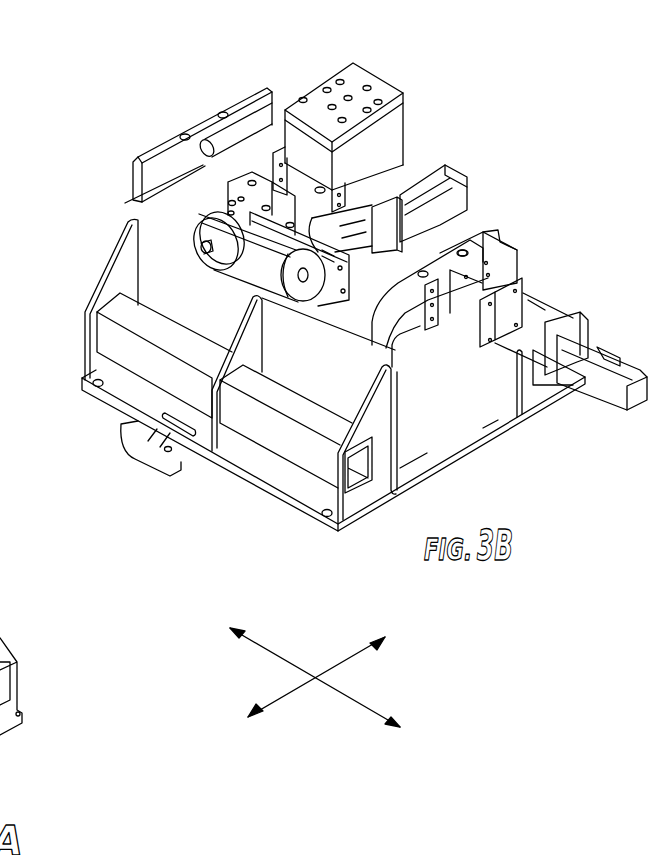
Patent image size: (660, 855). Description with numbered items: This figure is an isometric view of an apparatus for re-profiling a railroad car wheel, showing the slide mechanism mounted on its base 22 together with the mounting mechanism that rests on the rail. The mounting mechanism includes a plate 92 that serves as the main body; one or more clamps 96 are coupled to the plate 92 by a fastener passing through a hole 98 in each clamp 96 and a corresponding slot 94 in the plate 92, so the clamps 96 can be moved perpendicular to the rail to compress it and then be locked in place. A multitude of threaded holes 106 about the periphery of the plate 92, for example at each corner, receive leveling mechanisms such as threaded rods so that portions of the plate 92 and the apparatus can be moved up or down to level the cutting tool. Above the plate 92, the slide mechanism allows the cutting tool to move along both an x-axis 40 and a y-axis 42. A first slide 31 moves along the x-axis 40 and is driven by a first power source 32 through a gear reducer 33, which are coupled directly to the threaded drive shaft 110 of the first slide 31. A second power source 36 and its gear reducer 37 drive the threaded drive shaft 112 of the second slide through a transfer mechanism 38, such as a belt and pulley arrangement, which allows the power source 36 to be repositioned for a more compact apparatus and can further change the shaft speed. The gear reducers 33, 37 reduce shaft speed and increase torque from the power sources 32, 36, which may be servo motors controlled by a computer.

The base 22 is at (148, 268).
The first slide 31 is at (370, 210).
The first power source 32 is at (588, 382).
The gear reducer 33 is at (540, 320).
The second power source 36 is at (440, 172).
The gear reducer 37 is at (370, 247).
The transfer mechanism 38 is at (217, 215).
The x-axis 40 is at (283, 662).
The y-axis 42 is at (302, 683).
The plate 92 is at (290, 487).
The slot 94 is at (192, 437).
The clamp 96 is at (147, 452).
The hole 98 is at (168, 452).
The threaded holes 106 is at (87, 381).
The threaded drive shaft 110 is at (217, 147).
The threaded drive shaft 112 is at (307, 173).